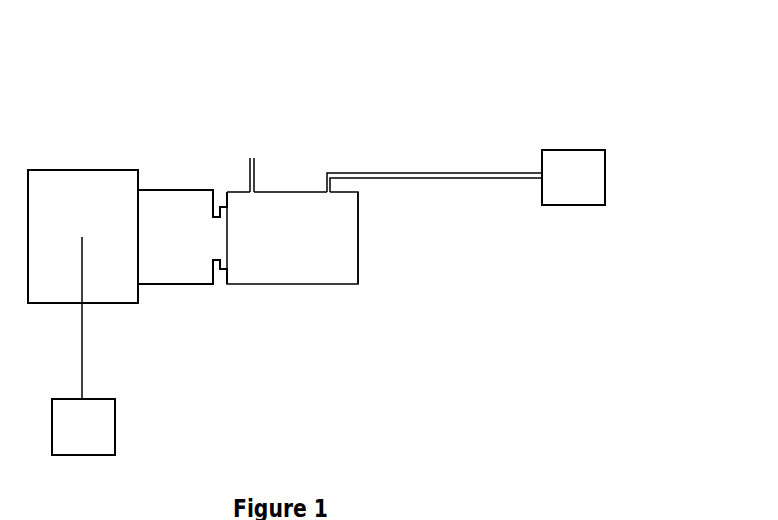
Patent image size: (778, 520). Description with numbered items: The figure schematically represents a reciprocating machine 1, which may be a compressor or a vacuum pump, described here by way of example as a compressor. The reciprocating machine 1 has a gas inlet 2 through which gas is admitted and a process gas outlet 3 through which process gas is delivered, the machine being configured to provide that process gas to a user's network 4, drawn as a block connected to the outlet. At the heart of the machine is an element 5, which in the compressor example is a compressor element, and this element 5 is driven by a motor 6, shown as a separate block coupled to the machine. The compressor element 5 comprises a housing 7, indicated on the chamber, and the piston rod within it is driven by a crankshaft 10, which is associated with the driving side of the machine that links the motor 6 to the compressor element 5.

The reciprocating machine 1 is at (420, 122).
The gas inlet 2 is at (253, 167).
The process gas outlet 3 is at (333, 172).
The user's network 4 is at (578, 150).
The element 5 is at (289, 263).
The motor 6 is at (105, 413).
The housing 7 is at (358, 247).
The crankshaft 10 is at (98, 190).